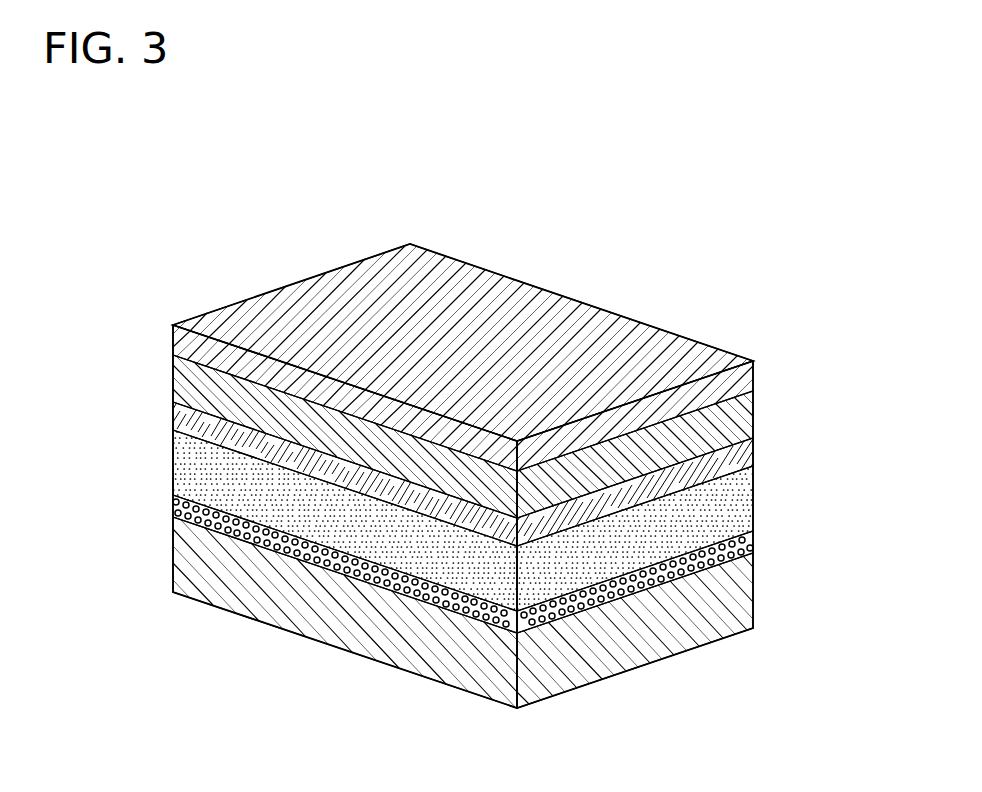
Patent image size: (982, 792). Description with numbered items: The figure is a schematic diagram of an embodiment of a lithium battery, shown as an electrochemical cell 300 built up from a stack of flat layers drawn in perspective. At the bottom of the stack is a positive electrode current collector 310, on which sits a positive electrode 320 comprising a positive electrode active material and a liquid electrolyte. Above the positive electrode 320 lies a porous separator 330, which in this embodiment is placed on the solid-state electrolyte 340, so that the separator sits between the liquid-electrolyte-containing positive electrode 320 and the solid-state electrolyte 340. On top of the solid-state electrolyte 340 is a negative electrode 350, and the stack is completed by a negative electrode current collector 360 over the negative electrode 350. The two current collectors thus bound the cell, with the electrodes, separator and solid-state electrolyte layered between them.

The electrochemical cell 300 is at (158, 200).
The positive electrode current collector 310 is at (753, 620).
The positive electrode 320 is at (753, 538).
The porous separator 330 is at (753, 498).
The solid-state electrolyte 340 is at (753, 452).
The negative electrode 350 is at (753, 415).
The negative electrode current collector 360 is at (753, 362).